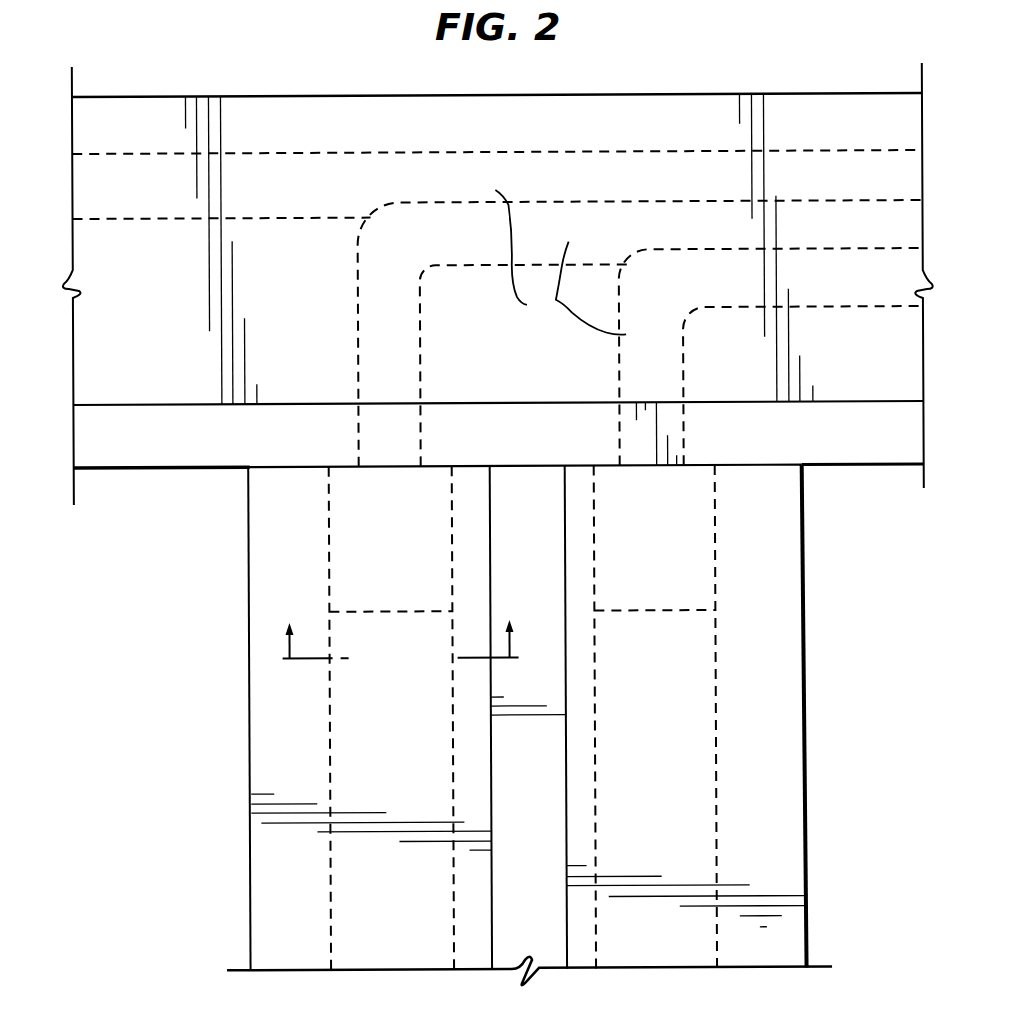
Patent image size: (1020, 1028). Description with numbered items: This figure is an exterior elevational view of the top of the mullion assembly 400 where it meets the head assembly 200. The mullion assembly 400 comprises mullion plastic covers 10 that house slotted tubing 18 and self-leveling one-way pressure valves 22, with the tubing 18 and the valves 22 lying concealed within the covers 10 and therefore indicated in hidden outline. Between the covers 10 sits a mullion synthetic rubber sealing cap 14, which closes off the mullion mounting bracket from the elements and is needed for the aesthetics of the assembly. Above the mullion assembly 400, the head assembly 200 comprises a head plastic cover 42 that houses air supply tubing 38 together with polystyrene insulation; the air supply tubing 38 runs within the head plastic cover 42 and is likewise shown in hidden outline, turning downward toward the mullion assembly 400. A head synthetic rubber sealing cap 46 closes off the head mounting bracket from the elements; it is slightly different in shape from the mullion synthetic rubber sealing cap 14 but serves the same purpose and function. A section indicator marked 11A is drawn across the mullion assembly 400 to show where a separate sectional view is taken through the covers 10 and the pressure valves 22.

The mullion plastic covers 10 is at (259, 867).
The mullion synthetic rubber sealing cap 14 is at (537, 843).
The slotted tubing 18 is at (406, 962).
The self-leveling one-way pressure valves 22 is at (406, 598).
The air supply tubing 38 is at (497, 328).
The head plastic cover 42 is at (793, 108).
The head synthetic rubber sealing cap 46 is at (845, 466).
The head assembly 200 is at (165, 452).
The mullion assembly 400 is at (249, 708).
The section line 11A is at (406, 658).